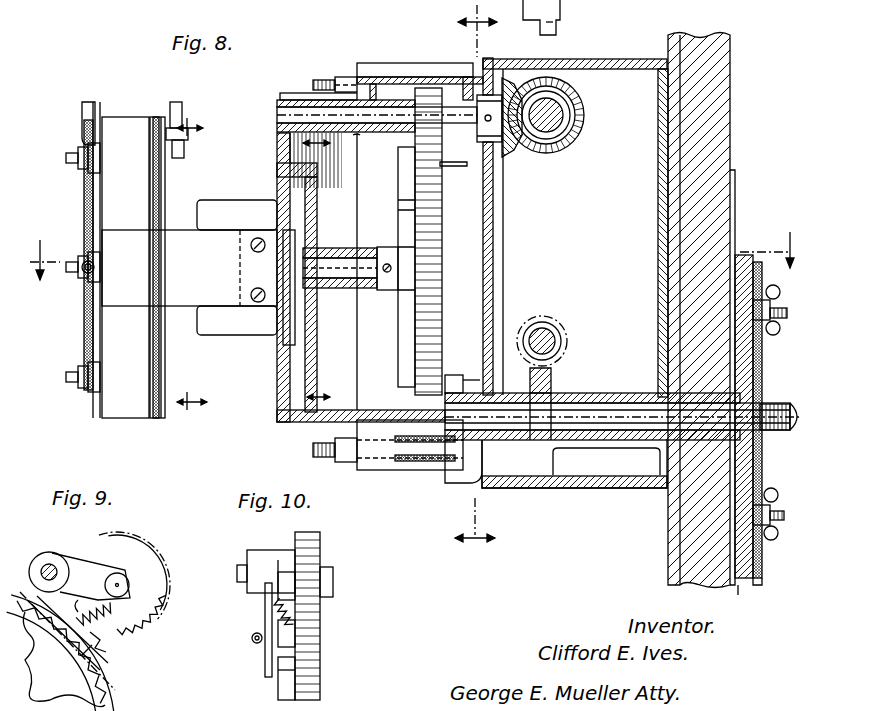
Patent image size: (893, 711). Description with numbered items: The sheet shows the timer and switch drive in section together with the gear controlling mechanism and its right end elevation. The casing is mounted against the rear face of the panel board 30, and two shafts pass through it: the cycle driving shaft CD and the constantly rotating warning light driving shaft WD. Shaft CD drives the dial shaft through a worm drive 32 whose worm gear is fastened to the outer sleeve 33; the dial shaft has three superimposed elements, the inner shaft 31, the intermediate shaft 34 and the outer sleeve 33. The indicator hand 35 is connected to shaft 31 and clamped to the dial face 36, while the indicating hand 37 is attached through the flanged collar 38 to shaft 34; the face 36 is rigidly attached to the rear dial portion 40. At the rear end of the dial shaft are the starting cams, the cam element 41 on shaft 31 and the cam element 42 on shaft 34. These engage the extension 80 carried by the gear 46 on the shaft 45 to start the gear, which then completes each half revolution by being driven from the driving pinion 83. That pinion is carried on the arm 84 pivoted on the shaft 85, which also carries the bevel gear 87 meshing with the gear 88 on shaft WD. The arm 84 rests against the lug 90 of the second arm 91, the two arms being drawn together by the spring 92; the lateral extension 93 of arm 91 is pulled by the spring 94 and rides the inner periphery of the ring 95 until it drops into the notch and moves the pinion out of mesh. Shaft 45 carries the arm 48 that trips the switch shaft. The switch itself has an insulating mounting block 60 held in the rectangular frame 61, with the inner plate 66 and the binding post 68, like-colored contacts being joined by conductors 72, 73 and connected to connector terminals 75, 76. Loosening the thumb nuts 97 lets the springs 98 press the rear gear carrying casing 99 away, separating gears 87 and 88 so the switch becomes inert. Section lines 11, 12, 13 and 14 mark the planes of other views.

In FIG. 8, the section line 11 is at (424, 269).
In FIG. 8, the section line 12 is at (462, 286).
In FIG. 8, the clearance dimension 13 is at (330, 270).
In FIG. 8, the section line 14 is at (194, 269).
In FIG. 8, the panel board 30 is at (718, 72).
In FIG. 8, the dial shaft 31 is at (612, 418).
In FIG. 8, the worm drive 32 is at (552, 372).
In FIG. 8, the outer sleeve 33 is at (565, 402).
In FIG. 8, the intermediate shaft 34 is at (615, 393).
In FIG. 8, the indicator hand 35 is at (762, 480).
In FIG. 8, the dial face 36 is at (757, 581).
In FIG. 8, the indicating hand 37 is at (760, 262).
In FIG. 8, the flanged collar 38 is at (760, 382).
In FIG. 8, the rear dial portion 40 is at (740, 601).
In FIG. 8, the cam element 41 is at (455, 375).
In FIG. 8, the cam element 42 is at (465, 484).
In FIG. 8, the shaft 45 is at (355, 262).
In FIG. 8, the gear 46 is at (437, 244).
In FIG. 9, the gear 46 is at (112, 685).
In FIG. 10, the gear 46 is at (318, 662).
In FIG. 8, the arm 48 is at (290, 338).
In FIG. 8, the mounting block 60 is at (130, 418).
In FIG. 8, the frame 61 is at (189, 268).
In FIG. 8, the inner plate 66 is at (160, 400).
In FIG. 8, the binding post 68 is at (172, 112).
In FIG. 8, the conductor 72 is at (85, 212).
In FIG. 8, the conductor 73 is at (84, 338).
In FIG. 8, the connector terminal 75 is at (84, 122).
In FIG. 8, the connector terminal 76 is at (80, 275).
In FIG. 8, the extension 80 is at (455, 168).
In FIG. 9, the driving pinion 83 is at (160, 610).
In FIG. 10, the driving pinion 83 is at (322, 555).
In FIG. 9, the arm 84 is at (90, 555).
In FIG. 10, the arm 84 is at (283, 560).
In FIG. 8, the shaft 85 is at (278, 112).
In FIG. 9, the shaft 85 is at (48, 565).
In FIG. 10, the shaft 85 is at (240, 572).
In FIG. 8, the bevel gear 87 is at (505, 82).
In FIG. 8, the gear 88 is at (533, 158).
In FIG. 9, the lug 90 is at (128, 568).
In FIG. 9, the second arm 91 is at (58, 600).
In FIG. 10, the second arm 91 is at (266, 600).
In FIG. 9, the spring 92 is at (110, 610).
In FIG. 10, the spring 92 is at (274, 612).
In FIG. 9, the lateral extension 93 is at (88, 660).
In FIG. 10, the lateral extension 93 is at (280, 665).
In FIG. 9, the spring 94 is at (108, 645).
In FIG. 10, the spring 94 is at (255, 642).
In FIG. 9, the ring 95 is at (45, 672).
In FIG. 8, the thumb nuts 97 is at (345, 77).
In FIG. 8, the springs 98 is at (418, 470).
In FIG. 8, the rear gear carrying casing 99 is at (280, 414).
In FIG. 8, the warning light driving shaft WD is at (560, 12).
In FIG. 8, the cycle driving shaft CD is at (555, 328).